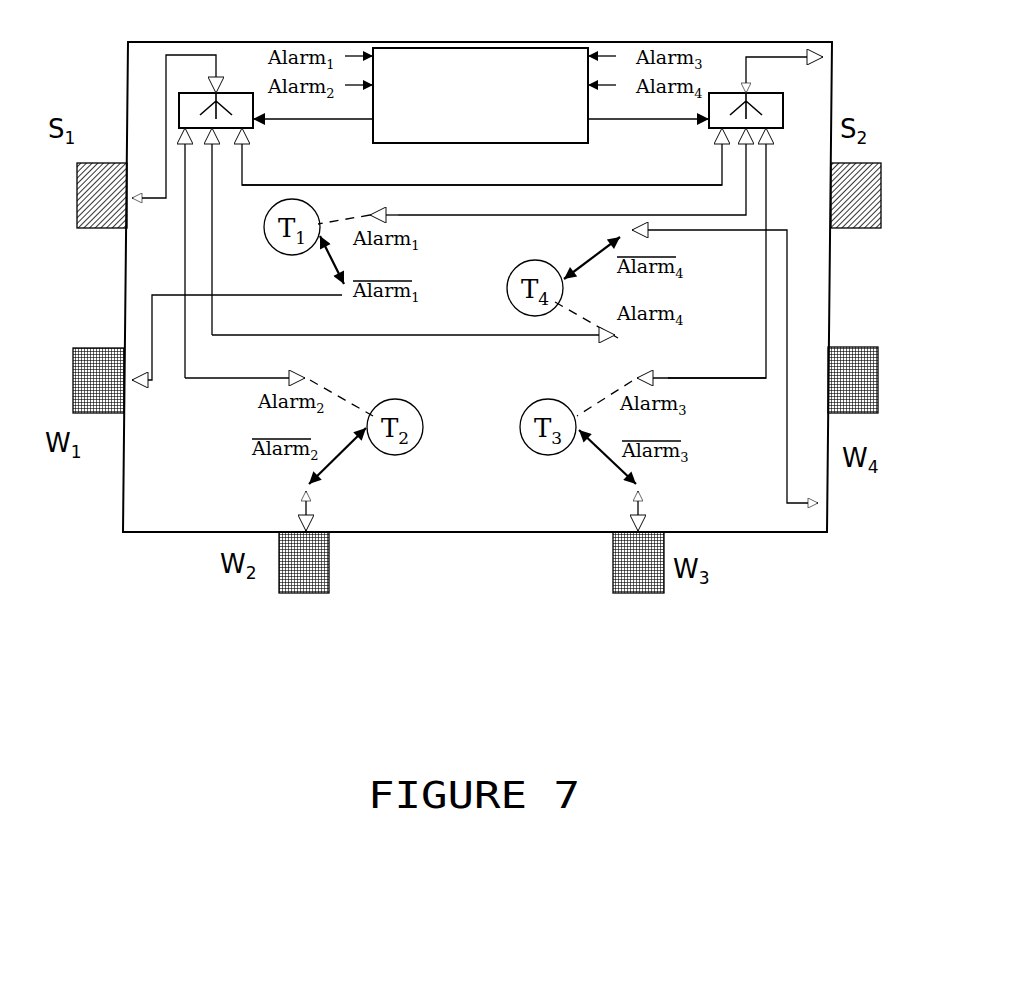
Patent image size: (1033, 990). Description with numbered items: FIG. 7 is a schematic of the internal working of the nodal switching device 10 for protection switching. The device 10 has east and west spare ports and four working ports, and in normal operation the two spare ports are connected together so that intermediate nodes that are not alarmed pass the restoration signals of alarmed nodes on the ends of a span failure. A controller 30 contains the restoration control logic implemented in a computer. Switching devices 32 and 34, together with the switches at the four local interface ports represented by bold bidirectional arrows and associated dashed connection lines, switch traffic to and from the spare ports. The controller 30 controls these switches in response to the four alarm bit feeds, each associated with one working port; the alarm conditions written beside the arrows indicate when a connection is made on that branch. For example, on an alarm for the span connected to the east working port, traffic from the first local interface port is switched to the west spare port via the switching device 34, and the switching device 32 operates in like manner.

The device 10 is at (833, 45).
The controller 30 is at (512, 48).
The switching device 32 is at (179, 103).
The switching device 34 is at (783, 115).